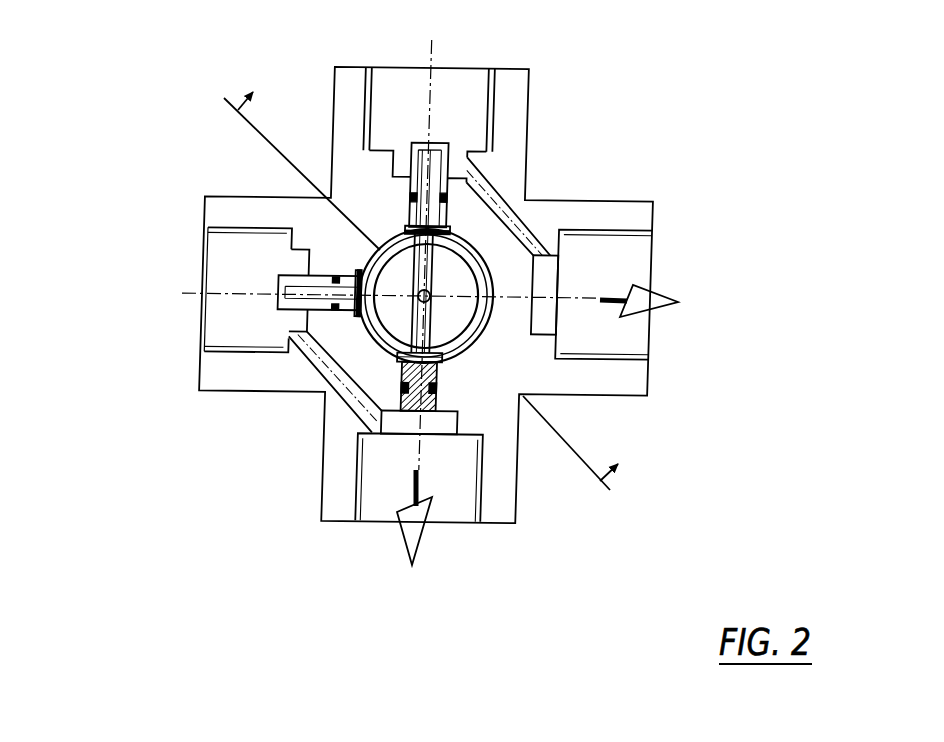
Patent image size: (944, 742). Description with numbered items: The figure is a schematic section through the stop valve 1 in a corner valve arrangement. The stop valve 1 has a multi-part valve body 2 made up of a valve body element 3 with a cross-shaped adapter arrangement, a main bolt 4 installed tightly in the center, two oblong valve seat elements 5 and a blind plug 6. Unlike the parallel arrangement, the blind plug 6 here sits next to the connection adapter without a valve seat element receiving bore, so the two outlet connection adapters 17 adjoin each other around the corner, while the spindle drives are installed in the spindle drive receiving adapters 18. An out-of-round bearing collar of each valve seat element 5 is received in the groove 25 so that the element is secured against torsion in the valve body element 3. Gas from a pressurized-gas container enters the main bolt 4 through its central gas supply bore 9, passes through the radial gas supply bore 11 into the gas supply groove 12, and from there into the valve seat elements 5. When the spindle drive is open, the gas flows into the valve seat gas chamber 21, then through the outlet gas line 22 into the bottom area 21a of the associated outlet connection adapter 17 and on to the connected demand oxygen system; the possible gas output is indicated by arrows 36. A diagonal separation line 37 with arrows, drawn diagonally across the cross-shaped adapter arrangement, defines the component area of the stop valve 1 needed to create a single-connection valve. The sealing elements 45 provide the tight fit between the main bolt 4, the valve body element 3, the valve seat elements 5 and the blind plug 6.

The stop valve 1 is at (140, 46).
The valve body 2 is at (162, 110).
The valve body element 3 is at (361, 174).
The main bolt 4 is at (398, 282).
The valve seat element 5 is at (437, 143).
The blind plug 6 is at (421, 412).
The central gas supply bore 9 is at (430, 288).
The radial gas supply bore 11 is at (477, 354).
The gas supply groove 12 is at (473, 333).
The outlet connection adapter 17 is at (607, 337).
The spindle drive receiving adapter 18 is at (397, 110).
The valve seat gas chamber 21 is at (461, 158).
The bottom area 21a is at (550, 278).
The outlet gas line 22 is at (505, 212).
The groove 25 is at (548, 278).
The arrows 36 is at (673, 302).
The diagonal separation line 37 is at (607, 490).
The sealing elements 45 is at (390, 194).